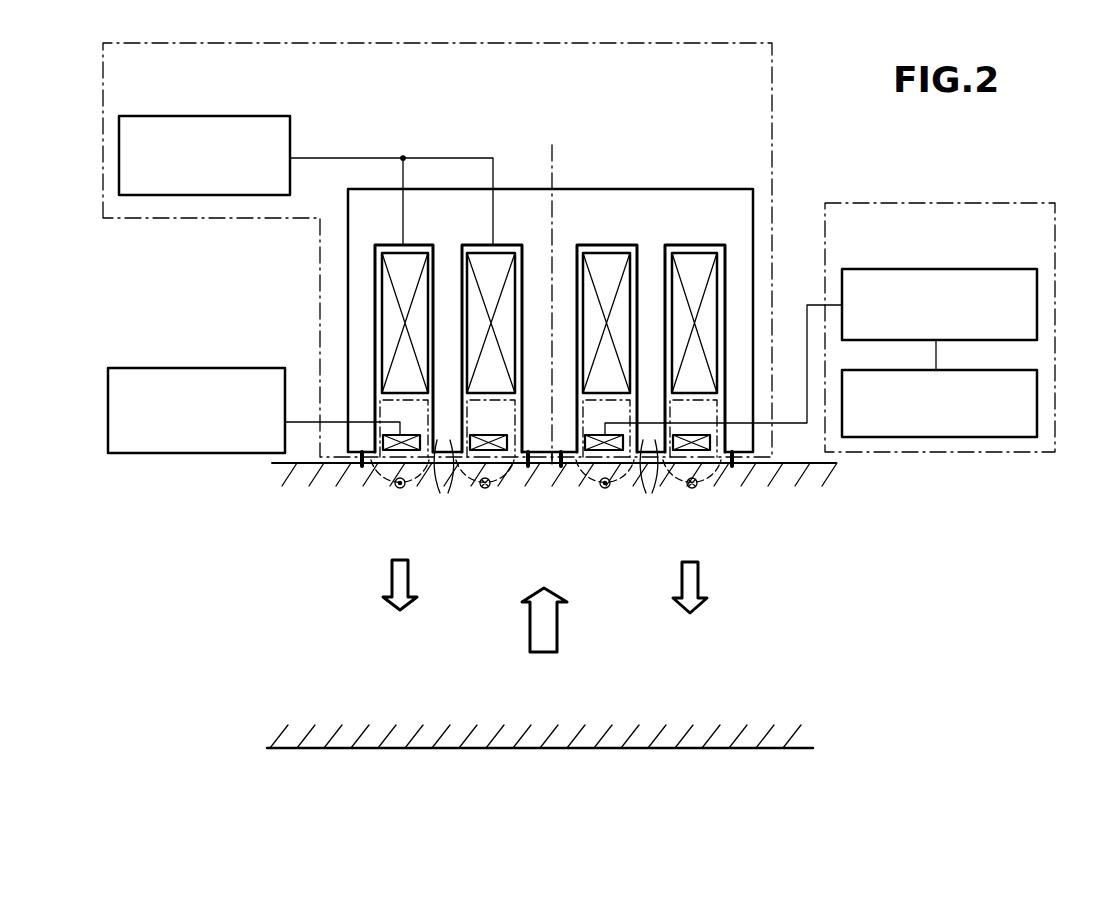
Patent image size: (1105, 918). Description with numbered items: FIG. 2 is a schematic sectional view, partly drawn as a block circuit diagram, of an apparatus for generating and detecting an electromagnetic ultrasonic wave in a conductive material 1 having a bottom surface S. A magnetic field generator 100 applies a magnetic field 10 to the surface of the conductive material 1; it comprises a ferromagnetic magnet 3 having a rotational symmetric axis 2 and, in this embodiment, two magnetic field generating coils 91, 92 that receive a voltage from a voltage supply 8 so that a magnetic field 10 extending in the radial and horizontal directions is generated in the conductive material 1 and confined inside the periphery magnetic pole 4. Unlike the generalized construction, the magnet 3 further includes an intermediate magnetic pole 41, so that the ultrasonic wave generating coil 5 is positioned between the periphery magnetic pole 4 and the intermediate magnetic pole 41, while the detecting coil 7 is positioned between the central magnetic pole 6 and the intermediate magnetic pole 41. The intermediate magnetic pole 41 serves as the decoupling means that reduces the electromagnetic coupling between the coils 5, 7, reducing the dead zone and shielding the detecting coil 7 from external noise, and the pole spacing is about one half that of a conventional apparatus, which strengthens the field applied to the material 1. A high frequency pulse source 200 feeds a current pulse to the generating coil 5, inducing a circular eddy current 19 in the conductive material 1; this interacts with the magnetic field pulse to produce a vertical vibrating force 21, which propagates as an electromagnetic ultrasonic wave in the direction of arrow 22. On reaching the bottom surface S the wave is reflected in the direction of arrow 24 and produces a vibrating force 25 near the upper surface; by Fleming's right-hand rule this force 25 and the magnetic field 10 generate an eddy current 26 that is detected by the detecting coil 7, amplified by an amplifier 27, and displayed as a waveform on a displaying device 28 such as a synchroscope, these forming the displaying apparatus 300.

The conductive material 1 is at (792, 465).
The rotational symmetric axis 2 is at (556, 166).
The ferromagnetic magnet 3 is at (672, 189).
The periphery magnetic pole 4 is at (352, 442).
The ultrasonic wave generating coil 5 is at (415, 435).
The central magnetic pole 6 is at (553, 465).
The detecting coil 7 is at (490, 435).
The voltage supply 8 is at (290, 152).
The magnetic field 10 is at (362, 470).
The eddy current 19 is at (395, 486).
The vibrating force 21 is at (401, 492).
The arrow 22 is at (408, 585).
The arrow 24 is at (557, 625).
The vibrating force 25 is at (487, 492).
The eddy current 26 is at (480, 488).
The amplifier 27 is at (842, 286).
The displaying device 28 is at (842, 393).
The intermediate magnetic pole 41 is at (441, 472).
The magnetic field generating coil 91 is at (398, 245).
The magnetic field generating coil 92 is at (484, 245).
The magnetic field generator 100 is at (290, 221).
The high frequency pulse source 200 is at (217, 368).
The displaying apparatus 300 is at (905, 203).
The bottom surface S is at (424, 748).